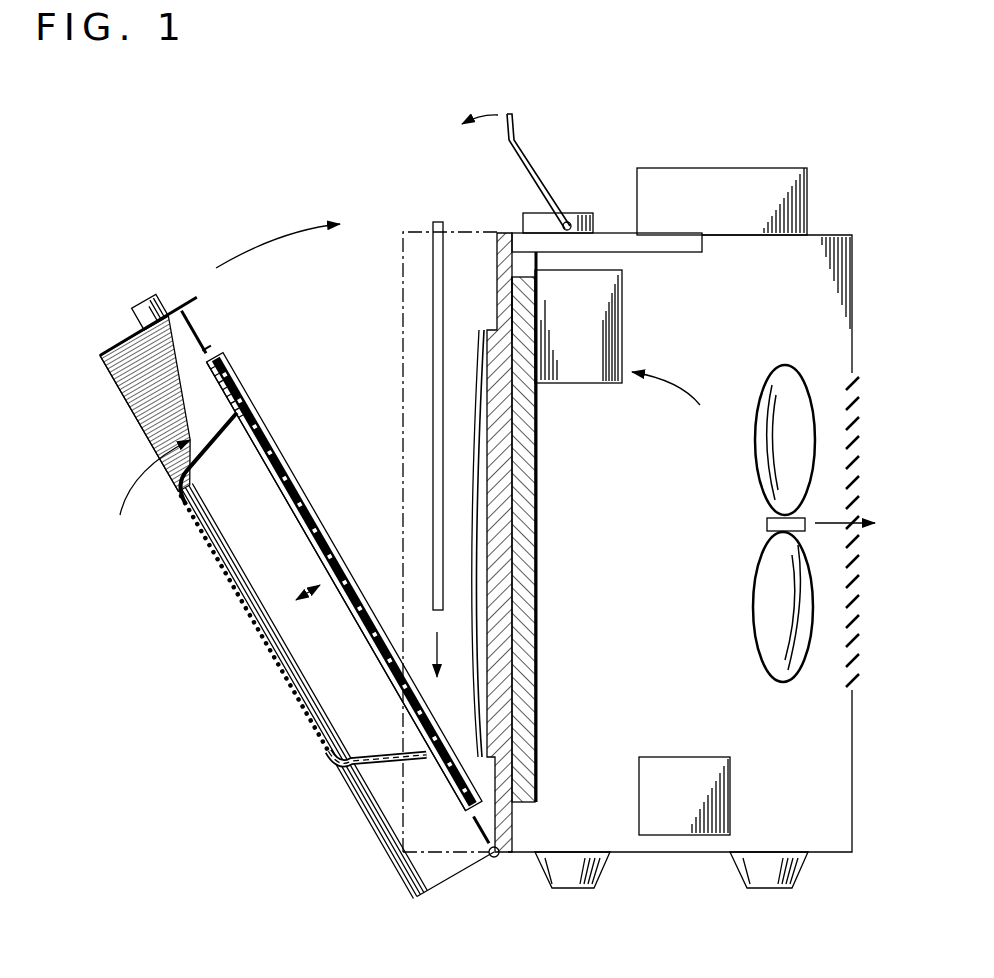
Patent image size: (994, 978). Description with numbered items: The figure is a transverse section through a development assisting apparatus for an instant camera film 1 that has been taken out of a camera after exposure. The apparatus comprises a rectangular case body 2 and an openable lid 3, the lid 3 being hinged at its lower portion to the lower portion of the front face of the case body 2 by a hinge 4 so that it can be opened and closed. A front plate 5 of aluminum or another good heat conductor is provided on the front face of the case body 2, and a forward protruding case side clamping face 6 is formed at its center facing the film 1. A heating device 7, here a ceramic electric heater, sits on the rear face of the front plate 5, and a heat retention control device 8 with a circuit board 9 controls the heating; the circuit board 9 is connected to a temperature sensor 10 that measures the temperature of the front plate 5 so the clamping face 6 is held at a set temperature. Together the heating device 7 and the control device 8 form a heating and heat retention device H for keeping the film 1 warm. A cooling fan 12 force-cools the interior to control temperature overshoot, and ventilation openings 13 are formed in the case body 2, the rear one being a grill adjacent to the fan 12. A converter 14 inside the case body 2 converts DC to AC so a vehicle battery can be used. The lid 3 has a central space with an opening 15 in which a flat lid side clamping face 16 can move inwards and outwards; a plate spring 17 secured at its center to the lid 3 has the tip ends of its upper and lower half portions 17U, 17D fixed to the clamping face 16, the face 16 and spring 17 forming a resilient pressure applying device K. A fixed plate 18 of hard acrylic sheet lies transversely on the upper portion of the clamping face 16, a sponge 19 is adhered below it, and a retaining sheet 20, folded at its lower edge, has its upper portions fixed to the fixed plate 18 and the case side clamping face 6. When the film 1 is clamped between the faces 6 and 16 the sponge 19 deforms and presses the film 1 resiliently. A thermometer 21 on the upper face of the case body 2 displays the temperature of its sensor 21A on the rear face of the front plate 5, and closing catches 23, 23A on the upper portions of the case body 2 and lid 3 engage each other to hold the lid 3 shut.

The instant camera film 1 is at (430, 218).
The case body 2 is at (832, 230).
The openable lid 3 is at (403, 318).
The hinge 4 is at (492, 860).
The front plate 5 is at (495, 257).
The case side clamping face 6 is at (533, 498).
The heating device 7 is at (523, 432).
The heat retention control device 8 is at (607, 342).
The circuit board 9 is at (610, 300).
The temperature sensor 10 is at (512, 313).
The cooling fan 12 is at (778, 683).
The ventilation openings 13 is at (843, 443).
The converter 14 is at (667, 785).
The opening 15 is at (212, 353).
The lid side clamping face 16 is at (270, 423).
The plate spring 17 is at (253, 630).
The upper half portion 17U is at (178, 488).
The lower half portion 17D is at (383, 770).
The fixed plate 18 is at (233, 370).
The sponge 19 is at (307, 510).
The retaining sheet 20 is at (377, 608).
The thermometer 21 is at (703, 178).
The sensor 21A is at (548, 214).
The closing catch 23 is at (520, 128).
The closing catch 23A is at (135, 300).
The heating and heat retention device H is at (666, 401).
The resilient pressure applying device K is at (147, 495).